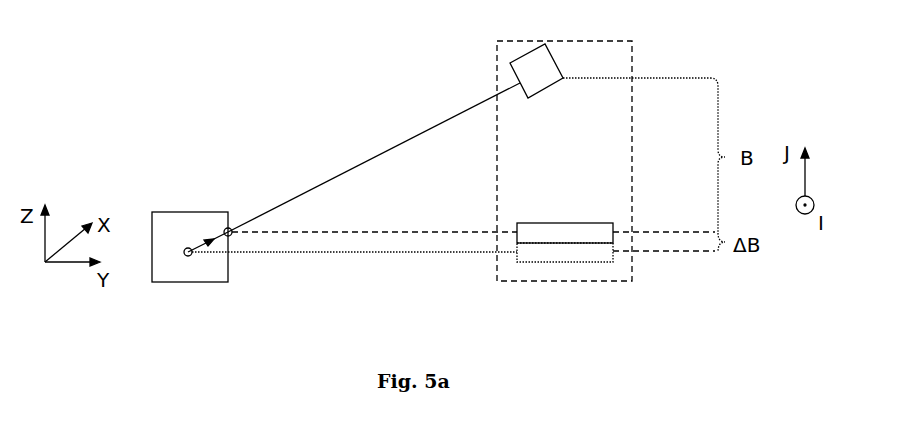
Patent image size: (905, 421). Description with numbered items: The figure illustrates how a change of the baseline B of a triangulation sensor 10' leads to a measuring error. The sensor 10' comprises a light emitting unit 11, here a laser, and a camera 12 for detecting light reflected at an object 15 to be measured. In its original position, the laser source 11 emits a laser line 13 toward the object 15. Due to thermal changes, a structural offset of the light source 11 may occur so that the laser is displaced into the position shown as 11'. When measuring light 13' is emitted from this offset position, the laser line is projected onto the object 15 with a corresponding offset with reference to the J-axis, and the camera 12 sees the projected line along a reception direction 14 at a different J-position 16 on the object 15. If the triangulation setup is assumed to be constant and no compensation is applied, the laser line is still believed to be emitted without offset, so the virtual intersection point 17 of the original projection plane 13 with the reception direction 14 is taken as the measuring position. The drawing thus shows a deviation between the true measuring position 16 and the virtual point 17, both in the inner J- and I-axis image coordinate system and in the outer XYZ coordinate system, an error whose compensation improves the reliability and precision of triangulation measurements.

The triangulation sensor 10' is at (564, 161).
The light emitting unit 11 is at (598, 280).
The displaced laser position 11' is at (605, 203).
The camera 12 is at (557, 53).
The laser line 13 is at (453, 274).
The measuring light 13' is at (473, 215).
The reception direction 14 is at (374, 157).
The object 15 is at (180, 223).
The J-position 16 is at (231, 228).
The virtual intersection point 17 is at (162, 285).